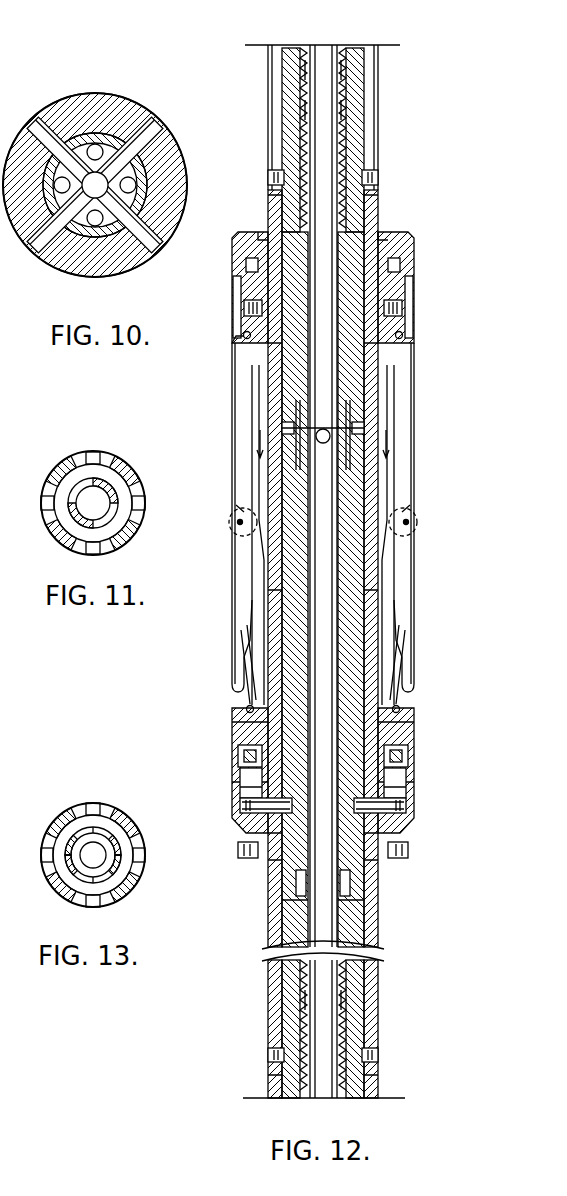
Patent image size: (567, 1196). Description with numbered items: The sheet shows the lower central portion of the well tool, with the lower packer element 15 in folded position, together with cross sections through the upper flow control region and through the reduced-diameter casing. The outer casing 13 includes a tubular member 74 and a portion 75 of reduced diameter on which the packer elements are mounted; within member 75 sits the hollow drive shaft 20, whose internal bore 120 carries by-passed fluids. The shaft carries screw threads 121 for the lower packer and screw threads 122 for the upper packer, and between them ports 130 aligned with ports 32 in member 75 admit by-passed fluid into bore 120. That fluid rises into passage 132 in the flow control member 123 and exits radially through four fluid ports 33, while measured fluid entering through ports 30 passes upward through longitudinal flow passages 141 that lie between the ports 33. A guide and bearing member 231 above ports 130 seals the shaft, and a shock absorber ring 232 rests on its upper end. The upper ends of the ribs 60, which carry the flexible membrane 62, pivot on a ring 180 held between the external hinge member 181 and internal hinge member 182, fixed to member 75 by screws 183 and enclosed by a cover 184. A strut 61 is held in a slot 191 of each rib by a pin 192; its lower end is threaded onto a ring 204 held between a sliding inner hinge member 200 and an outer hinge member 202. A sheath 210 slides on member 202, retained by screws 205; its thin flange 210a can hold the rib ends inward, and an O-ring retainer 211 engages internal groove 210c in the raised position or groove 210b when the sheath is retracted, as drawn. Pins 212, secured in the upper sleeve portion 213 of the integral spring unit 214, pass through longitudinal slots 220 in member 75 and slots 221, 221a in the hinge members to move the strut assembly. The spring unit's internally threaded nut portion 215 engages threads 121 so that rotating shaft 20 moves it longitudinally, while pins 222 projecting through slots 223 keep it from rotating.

In FIG. 12, the outer casing 13 is at (323, 458).
In FIG. 12, the lower packer element 15 is at (233, 479).
In FIG. 11, the hollow drive shaft 20 is at (76, 490).
In FIG. 13, the hollow drive shaft 20 is at (116, 843).
In FIG. 12, the hollow drive shaft 20 is at (270, 871).
In FIG. 11, the ports 30 is at (100, 455).
In FIG. 13, the ports 32 is at (42, 851).
In FIG. 12, the ports 32 is at (272, 430).
In FIG. 10, the fluid ports 33 is at (42, 130).
In FIG. 12, the ribs 60 is at (240, 438).
In FIG. 12, the strut 61 is at (252, 641).
In FIG. 12, the membrane 62 is at (412, 520).
In FIG. 10, the tubular member 74 is at (100, 94).
In FIG. 10, the portion of reduced diameter 75 is at (122, 112).
In FIG. 11, the portion of reduced diameter 75 is at (133, 473).
In FIG. 13, the portion of reduced diameter 75 is at (58, 835).
In FIG. 12, the portion of reduced diameter 75 is at (270, 222).
In FIG. 11, the internal bore or fluid flow path 120 is at (93, 503).
In FIG. 13, the internal bore or fluid flow path 120 is at (93, 855).
In FIG. 12, the internal bore or fluid flow path 120 is at (323, 44).
In FIG. 12, the screw threads 121 is at (284, 1003).
In FIG. 12, the screw threads 122 is at (358, 100).
In FIG. 10, the flow control member 123 is at (88, 140).
In FIG. 13, the ports 130 is at (97, 840).
In FIG. 12, the ports 130 is at (292, 416).
In FIG. 10, the passage 132 is at (95, 185).
In FIG. 10, the flow passages 141 is at (160, 215).
In FIG. 12, the ring 180 is at (240, 338).
In FIG. 12, the external cylindrical hinge member 181 is at (415, 242).
In FIG. 12, the internal cylindrical hinge member 182 is at (392, 236).
In FIG. 12, the screws 183 is at (250, 300).
In FIG. 12, the cylindrical-shaped cover 184 is at (415, 249).
In FIG. 12, the slot 191 is at (398, 505).
In FIG. 12, the pin 192 is at (410, 535).
In FIG. 12, the inner hinge member 200 is at (378, 862).
In FIG. 12, the external hinge member 202 is at (382, 860).
In FIG. 12, the ring 204 is at (246, 707).
In FIG. 12, the screws 205 is at (240, 850).
In FIG. 12, the sheath 210 is at (412, 788).
In FIG. 12, the flange 210a is at (415, 740).
In FIG. 12, the internal groove 210b is at (403, 758).
In FIG. 12, the internal groove 210c is at (414, 800).
In FIG. 12, the O-ring retainer 211 is at (410, 770).
In FIG. 12, the pins 212 is at (245, 806).
In FIG. 12, the upper sleeve portion 213 is at (360, 882).
In FIG. 12, the integral spring unit 214 is at (360, 62).
In FIG. 12, the internally threaded nut portion 215 is at (360, 130).
In FIG. 12, the longitudinal slots 220 is at (266, 612).
In FIG. 12, the slot 221 is at (245, 771).
In FIG. 12, the slot 221a is at (248, 788).
In FIG. 12, the pins 222 is at (268, 176).
In FIG. 12, the slots 223 is at (272, 198).
In FIG. 12, the guide and bearing member 231 is at (372, 352).
In FIG. 12, the shock absorber ring 232 is at (405, 260).